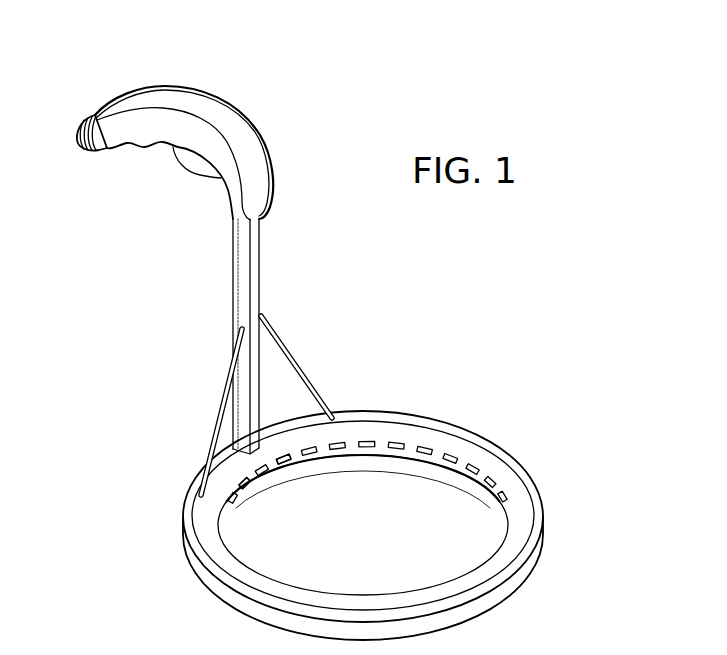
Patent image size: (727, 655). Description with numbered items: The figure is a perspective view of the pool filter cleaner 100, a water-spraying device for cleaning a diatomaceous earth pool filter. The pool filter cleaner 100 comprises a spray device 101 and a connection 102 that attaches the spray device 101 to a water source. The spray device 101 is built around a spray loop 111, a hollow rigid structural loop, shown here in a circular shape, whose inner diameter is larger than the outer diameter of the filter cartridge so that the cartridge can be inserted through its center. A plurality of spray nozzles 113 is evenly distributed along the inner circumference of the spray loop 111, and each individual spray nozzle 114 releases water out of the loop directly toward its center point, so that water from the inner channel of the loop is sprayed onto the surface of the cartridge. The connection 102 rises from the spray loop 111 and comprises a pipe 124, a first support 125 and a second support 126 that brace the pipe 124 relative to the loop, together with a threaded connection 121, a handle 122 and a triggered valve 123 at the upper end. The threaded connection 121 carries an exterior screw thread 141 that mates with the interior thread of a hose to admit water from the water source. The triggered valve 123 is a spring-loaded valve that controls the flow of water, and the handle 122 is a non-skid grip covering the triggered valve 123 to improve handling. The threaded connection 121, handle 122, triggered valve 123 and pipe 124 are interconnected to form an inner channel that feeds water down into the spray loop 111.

The pool filter cleaner 100 is at (470, 295).
The spray device 101 is at (492, 443).
The spray loop 111 is at (523, 502).
The plurality of spray nozzles 113 is at (486, 486).
The individual spray nozzle 114 is at (287, 459).
The connection 102 is at (260, 265).
The pipe 124 is at (251, 290).
The first support 125 is at (216, 420).
The second support 126 is at (305, 378).
The threaded connection 121 is at (94, 120).
The handle 122 is at (170, 121).
The triggered valve 123 is at (196, 168).
The exterior screw thread 141 is at (80, 152).